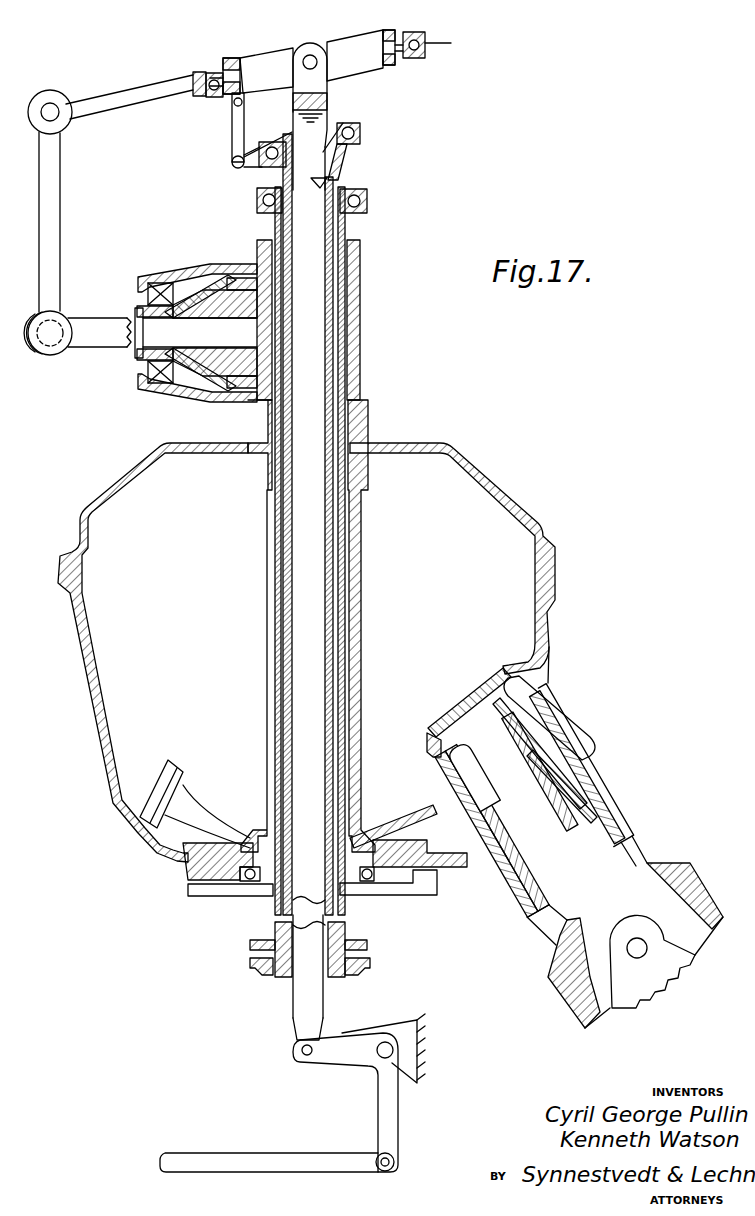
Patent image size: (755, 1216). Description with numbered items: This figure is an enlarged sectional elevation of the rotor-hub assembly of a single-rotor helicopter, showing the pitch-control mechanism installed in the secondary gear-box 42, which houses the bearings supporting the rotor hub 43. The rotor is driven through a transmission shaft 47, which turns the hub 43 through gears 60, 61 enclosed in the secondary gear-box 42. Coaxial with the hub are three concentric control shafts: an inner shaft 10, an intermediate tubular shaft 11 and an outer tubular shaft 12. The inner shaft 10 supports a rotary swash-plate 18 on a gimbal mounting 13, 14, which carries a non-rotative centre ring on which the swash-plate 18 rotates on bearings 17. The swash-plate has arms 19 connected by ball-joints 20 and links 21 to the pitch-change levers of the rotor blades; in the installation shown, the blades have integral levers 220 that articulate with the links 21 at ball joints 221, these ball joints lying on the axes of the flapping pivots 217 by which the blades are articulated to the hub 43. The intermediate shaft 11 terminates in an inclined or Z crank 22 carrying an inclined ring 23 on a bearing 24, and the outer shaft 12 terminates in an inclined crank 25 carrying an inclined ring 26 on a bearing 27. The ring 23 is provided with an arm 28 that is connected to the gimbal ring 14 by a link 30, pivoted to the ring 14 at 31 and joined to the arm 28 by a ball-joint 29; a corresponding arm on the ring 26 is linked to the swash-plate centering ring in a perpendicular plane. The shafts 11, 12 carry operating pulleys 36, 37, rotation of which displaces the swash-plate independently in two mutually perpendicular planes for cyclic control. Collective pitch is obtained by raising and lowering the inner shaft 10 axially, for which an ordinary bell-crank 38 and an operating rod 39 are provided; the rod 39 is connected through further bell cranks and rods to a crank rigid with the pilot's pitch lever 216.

The inner shaft 10 is at (316, 247).
The intermediate tubular shaft 11 is at (335, 281).
The outer tubular shaft 12 is at (346, 303).
The gimbal mounting 13 is at (306, 58).
The gimbal ring 14 is at (347, 58).
The bearings 17 is at (420, 50).
The rotary swash-plate 18 is at (450, 49).
The arms 19 is at (155, 88).
The ball-joints 20 is at (52, 108).
The links 21 is at (62, 194).
The inclined or Z crank 22 is at (336, 150).
The inclined ring 23 is at (360, 133).
The bearing 24 is at (353, 131).
The inclined crank 25 is at (330, 181).
The inclined ring 26 is at (367, 210).
The bearing 27 is at (367, 200).
The arm 28 is at (251, 163).
The ball-joint 29 is at (233, 165).
The link 30 is at (233, 135).
The pivot 31 is at (268, 131).
The operating pulley 36 is at (368, 962).
The operating pulley 37 is at (368, 944).
The bell-crank 38 is at (350, 1043).
The operating rod 39 is at (308, 1157).
The secondary gear-box 42 is at (84, 658).
The rotor hub 43 is at (361, 354).
The transmission shaft 47 is at (637, 980).
The gear 60 is at (558, 730).
The gear 61 is at (153, 793).
The pitch lever 216 is at (198, 268).
The flapping pivots 217 is at (214, 352).
The levers 220 is at (107, 335).
The ball joints 221 is at (52, 338).